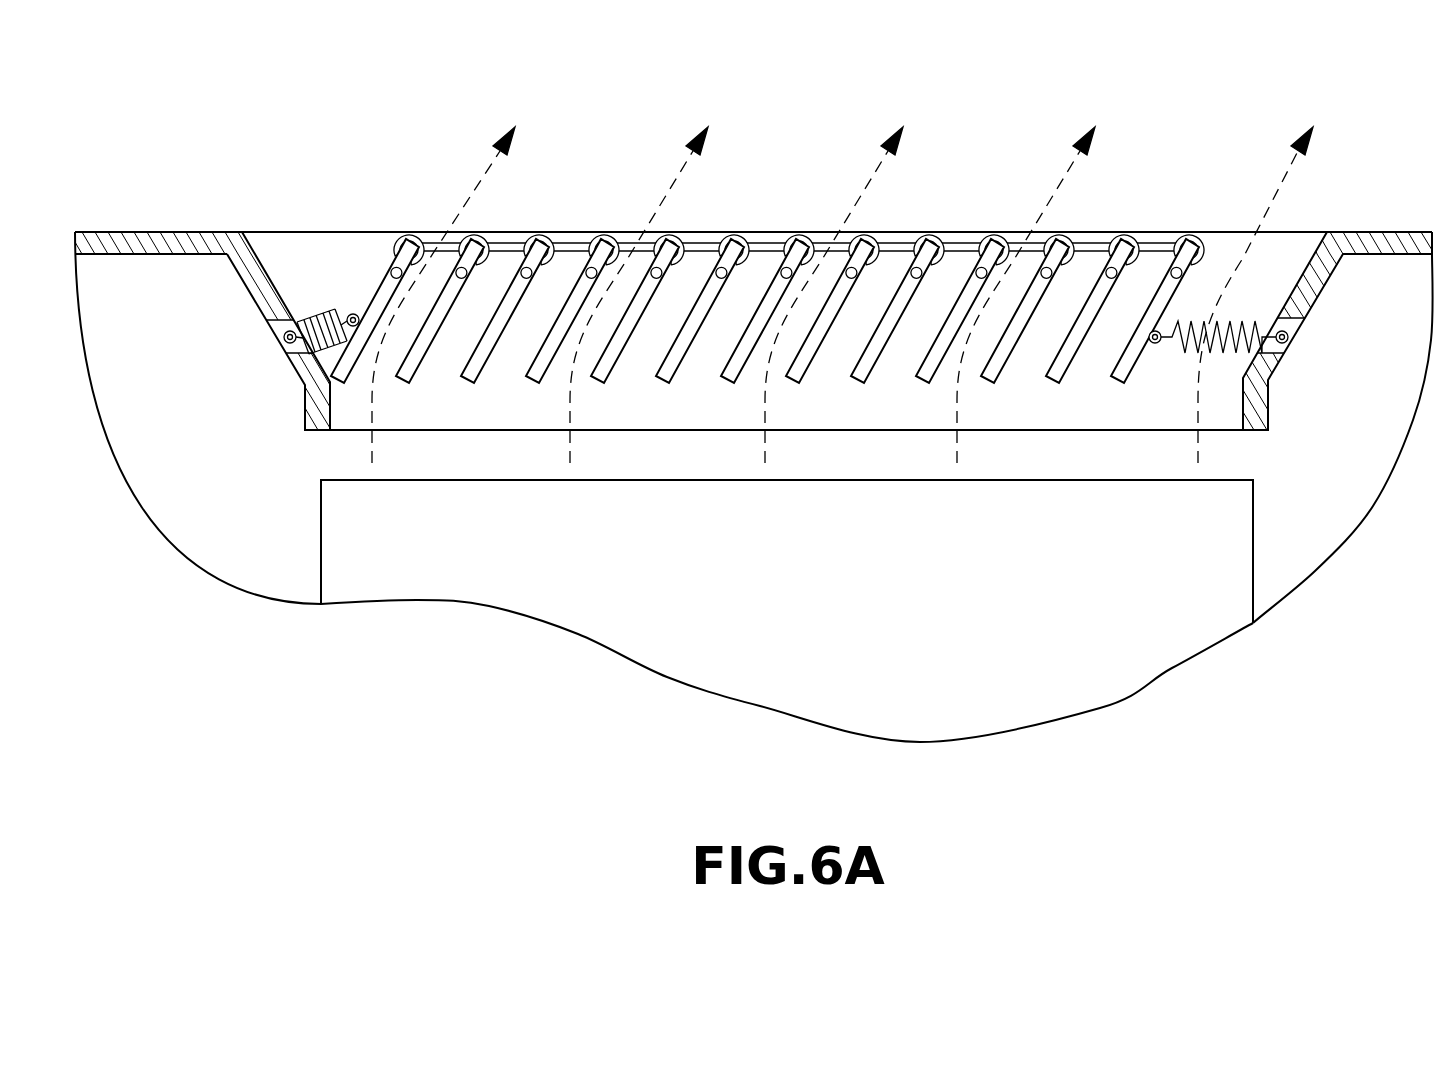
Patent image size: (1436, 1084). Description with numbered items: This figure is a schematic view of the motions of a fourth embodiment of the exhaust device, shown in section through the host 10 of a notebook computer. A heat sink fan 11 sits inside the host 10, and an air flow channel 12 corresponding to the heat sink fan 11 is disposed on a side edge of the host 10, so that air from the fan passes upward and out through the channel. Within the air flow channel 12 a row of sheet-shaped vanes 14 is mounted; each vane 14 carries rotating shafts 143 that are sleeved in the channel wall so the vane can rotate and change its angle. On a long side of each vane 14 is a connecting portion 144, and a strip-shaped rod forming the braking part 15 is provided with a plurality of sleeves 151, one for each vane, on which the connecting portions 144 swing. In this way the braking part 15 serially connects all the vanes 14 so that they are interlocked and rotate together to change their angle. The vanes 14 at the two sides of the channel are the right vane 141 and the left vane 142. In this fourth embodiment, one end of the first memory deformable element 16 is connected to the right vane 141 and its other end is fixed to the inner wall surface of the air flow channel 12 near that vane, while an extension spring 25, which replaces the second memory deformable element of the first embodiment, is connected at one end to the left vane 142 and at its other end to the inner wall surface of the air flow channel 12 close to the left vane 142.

The host 10 is at (113, 240).
The heat sink fan 11 is at (1224, 553).
The air flow channel 12 is at (299, 283).
The vanes 14 is at (569, 297).
The right vane 141 is at (1173, 300).
The left vane 142 is at (367, 290).
The rotating shafts 143 is at (781, 272).
The connecting portion 144 is at (988, 253).
The braking part 15 is at (1096, 243).
The sleeves 151 is at (988, 246).
The first memory deformable element 16 is at (1247, 307).
The extension spring 25 is at (319, 306).